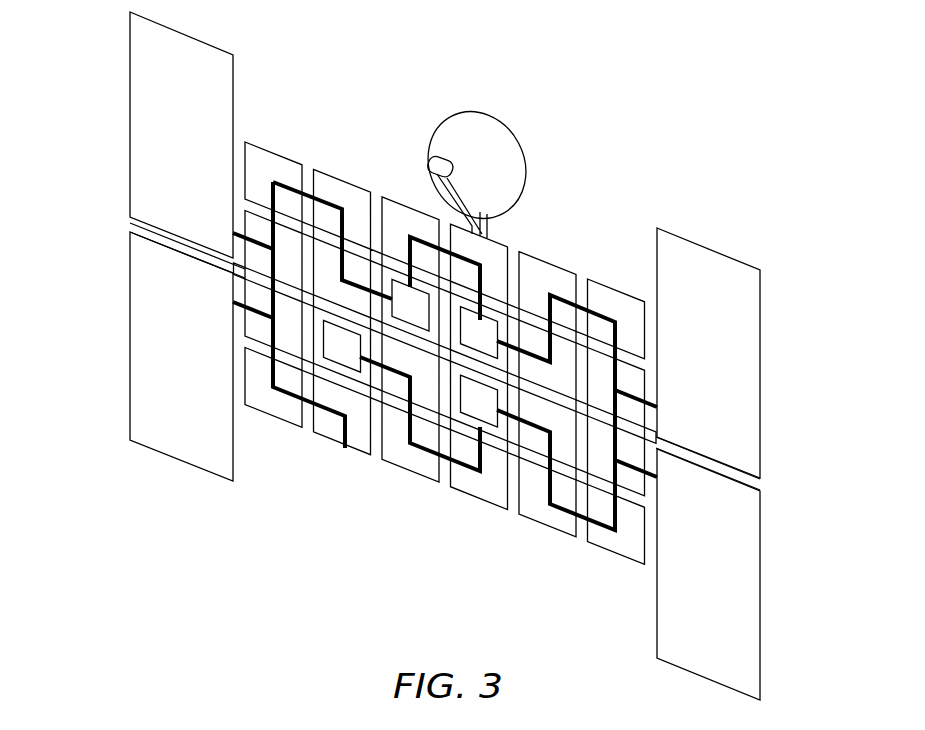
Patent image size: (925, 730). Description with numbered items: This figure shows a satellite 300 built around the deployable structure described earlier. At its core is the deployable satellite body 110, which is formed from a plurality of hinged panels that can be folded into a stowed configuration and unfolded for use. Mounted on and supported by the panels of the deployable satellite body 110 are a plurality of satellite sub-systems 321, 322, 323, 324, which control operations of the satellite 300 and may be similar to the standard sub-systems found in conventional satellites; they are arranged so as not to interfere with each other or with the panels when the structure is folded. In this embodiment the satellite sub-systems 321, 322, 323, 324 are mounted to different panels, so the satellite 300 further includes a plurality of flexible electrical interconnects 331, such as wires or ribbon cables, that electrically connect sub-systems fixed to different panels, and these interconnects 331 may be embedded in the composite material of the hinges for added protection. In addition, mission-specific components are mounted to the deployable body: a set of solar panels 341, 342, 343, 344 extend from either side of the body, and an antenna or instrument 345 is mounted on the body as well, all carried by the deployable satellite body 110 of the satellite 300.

The satellite 300 is at (716, 136).
The deployable satellite body 110 is at (272, 142).
The satellite sub-system 321 is at (402, 283).
The satellite sub-system 322 is at (492, 318).
The satellite sub-system 323 is at (484, 426).
The satellite sub-system 324 is at (355, 370).
The flexible electrical interconnect 331 is at (431, 453).
The solar panel 341 is at (130, 122).
The solar panel 342 is at (130, 336).
The solar panel 343 is at (760, 371).
The solar panel 344 is at (760, 590).
The antenna or instrument 345 is at (508, 140).